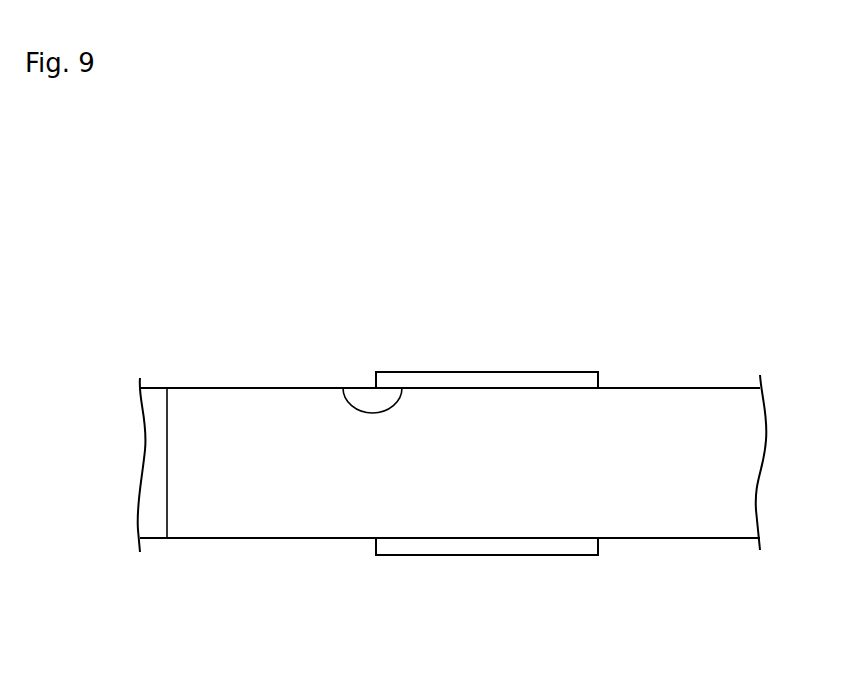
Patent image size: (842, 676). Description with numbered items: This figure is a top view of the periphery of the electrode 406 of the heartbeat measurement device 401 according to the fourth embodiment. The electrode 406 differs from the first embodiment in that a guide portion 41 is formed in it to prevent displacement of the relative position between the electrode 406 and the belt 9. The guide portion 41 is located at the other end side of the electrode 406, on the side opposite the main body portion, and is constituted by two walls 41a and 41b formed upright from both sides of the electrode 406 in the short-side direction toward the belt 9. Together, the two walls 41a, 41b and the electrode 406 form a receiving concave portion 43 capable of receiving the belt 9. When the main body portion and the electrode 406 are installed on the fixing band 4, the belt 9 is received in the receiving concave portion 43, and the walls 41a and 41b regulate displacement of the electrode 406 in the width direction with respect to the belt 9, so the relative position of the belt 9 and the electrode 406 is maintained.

The heartbeat measurement device 401 is at (635, 285).
The fixing band 4 is at (240, 388).
The receiving concave portion 43 is at (347, 387).
The guide portion 41 is at (470, 556).
The wall 41a is at (551, 556).
The wall 41b is at (494, 371).
The belt 9 is at (305, 497).
The electrode 406 is at (219, 510).